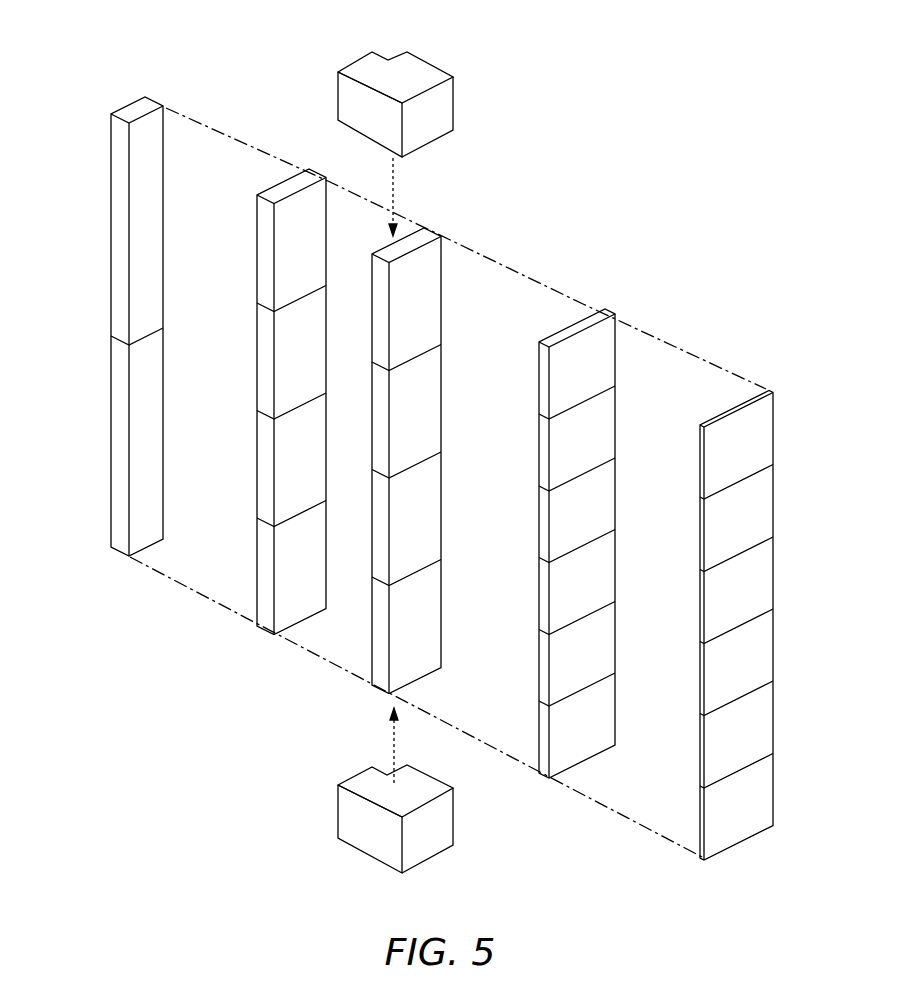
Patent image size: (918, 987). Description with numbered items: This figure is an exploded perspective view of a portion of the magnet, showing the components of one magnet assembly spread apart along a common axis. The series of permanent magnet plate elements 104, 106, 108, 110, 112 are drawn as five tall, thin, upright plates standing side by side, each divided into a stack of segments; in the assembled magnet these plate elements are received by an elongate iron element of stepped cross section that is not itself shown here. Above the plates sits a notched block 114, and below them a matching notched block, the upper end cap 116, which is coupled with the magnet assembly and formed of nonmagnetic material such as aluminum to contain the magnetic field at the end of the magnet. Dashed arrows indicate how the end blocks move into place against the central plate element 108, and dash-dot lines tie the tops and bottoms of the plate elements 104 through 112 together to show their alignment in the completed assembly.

The permanent magnet plate element 104 is at (117, 217).
The permanent magnet plate element 106 is at (257, 250).
The permanent magnet plate element 108 is at (432, 305).
The permanent magnet plate element 110 is at (610, 370).
The permanent magnet plate element 112 is at (773, 428).
The upper notched end block 114 is at (415, 68).
The upper end cap 116 is at (357, 843).